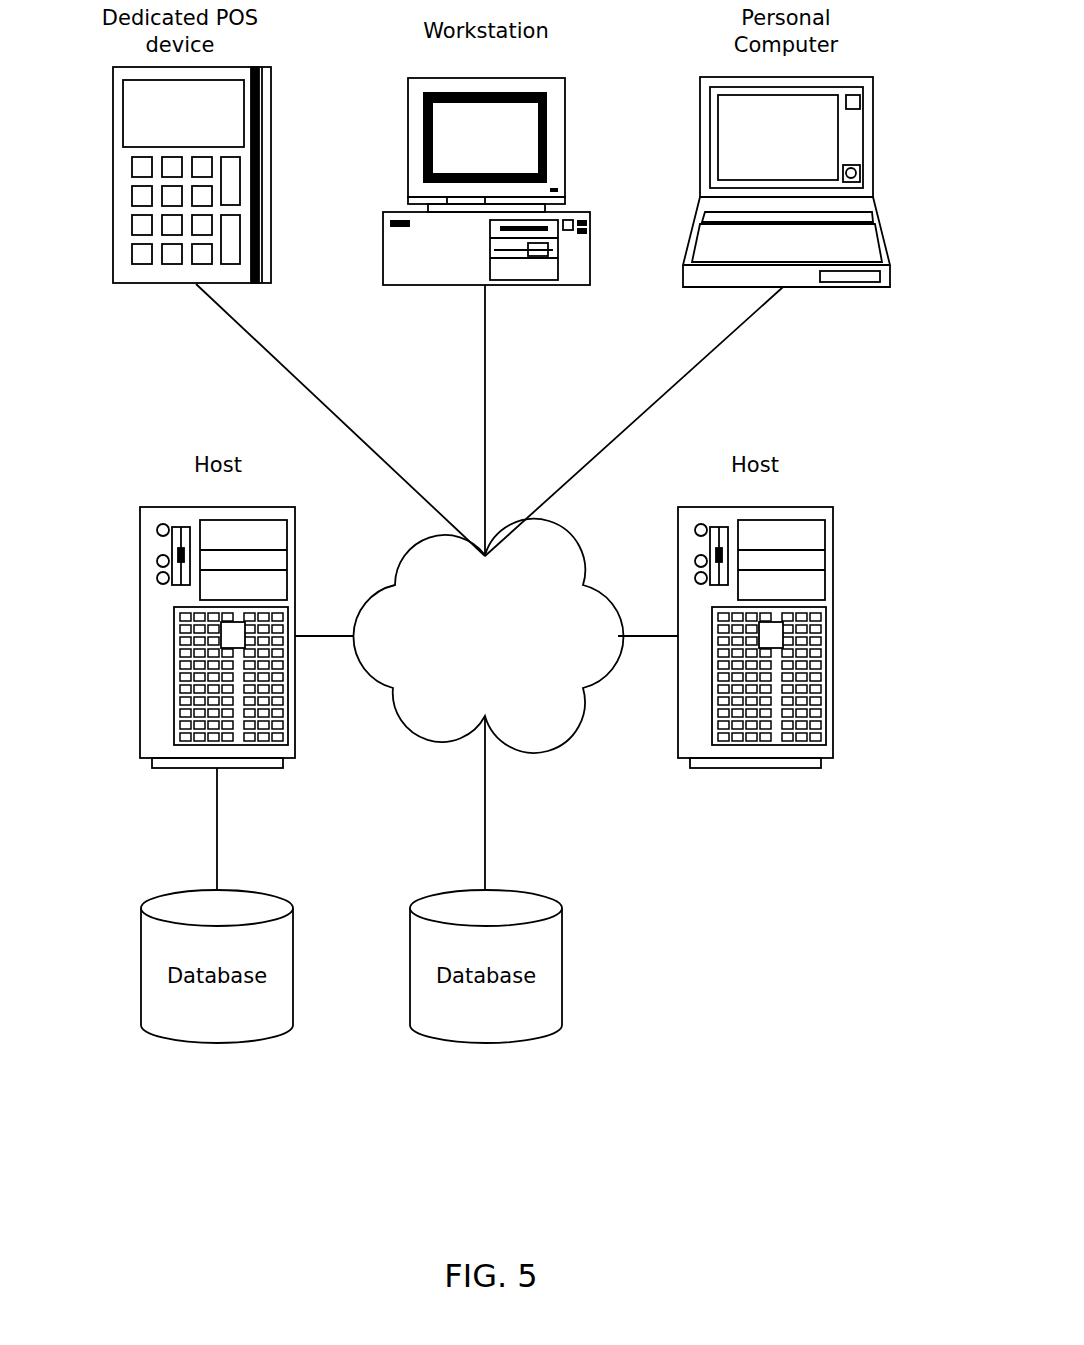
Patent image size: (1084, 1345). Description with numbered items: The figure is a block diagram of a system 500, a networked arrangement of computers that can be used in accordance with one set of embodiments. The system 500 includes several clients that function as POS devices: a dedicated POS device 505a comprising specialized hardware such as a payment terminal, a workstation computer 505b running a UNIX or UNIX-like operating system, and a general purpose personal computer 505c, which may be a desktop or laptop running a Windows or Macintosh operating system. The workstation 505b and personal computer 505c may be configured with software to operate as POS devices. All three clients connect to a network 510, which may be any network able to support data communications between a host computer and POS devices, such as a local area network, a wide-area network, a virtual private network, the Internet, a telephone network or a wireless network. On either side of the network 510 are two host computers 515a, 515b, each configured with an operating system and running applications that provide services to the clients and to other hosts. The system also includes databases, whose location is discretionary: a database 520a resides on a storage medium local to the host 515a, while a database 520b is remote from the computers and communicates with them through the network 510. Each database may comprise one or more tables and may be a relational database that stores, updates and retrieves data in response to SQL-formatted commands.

The system 500 is at (745, 1104).
The dedicated POS device 505a is at (272, 175).
The workstation computer 505b is at (383, 232).
The personal computer 505c is at (700, 183).
The network 510 is at (522, 740).
The host computer 515a is at (140, 636).
The host computer 515b is at (833, 636).
The database 520a is at (217, 1043).
The database 520b is at (486, 1043).